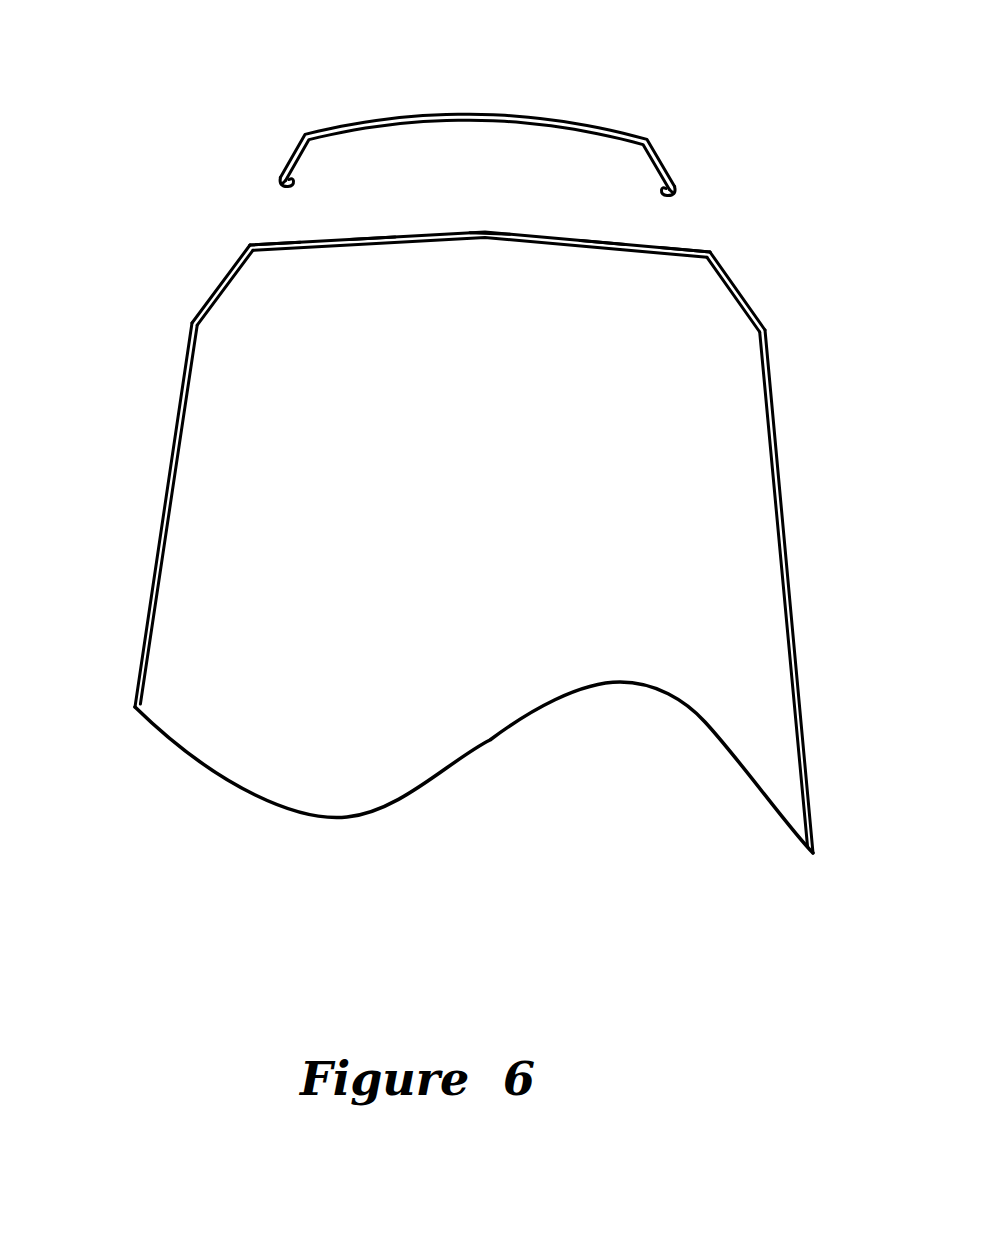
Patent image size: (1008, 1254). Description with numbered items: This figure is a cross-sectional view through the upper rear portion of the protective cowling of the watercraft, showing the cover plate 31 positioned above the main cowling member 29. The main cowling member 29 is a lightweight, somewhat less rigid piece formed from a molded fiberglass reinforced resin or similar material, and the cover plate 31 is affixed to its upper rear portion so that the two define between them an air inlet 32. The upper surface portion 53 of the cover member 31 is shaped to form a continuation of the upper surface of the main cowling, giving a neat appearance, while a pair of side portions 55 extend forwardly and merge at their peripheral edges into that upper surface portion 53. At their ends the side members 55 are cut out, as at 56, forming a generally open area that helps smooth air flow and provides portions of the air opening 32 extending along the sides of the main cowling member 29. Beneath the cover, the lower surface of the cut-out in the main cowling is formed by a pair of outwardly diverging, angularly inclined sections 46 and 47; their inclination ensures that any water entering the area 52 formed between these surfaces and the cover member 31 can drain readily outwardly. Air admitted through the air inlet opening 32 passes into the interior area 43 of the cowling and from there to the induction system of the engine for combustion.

The main cowling member 29 is at (477, 514).
The cover plate 31 is at (472, 106).
The air inlet 32 is at (280, 215).
The interior area 43 is at (540, 664).
The angularly inclined section 46 is at (366, 246).
The angularly inclined section 47 is at (593, 238).
The area 52 is at (492, 187).
The upper surface portion 53 is at (585, 126).
The side portions 55 is at (297, 150).
The cut-out 56 is at (222, 282).